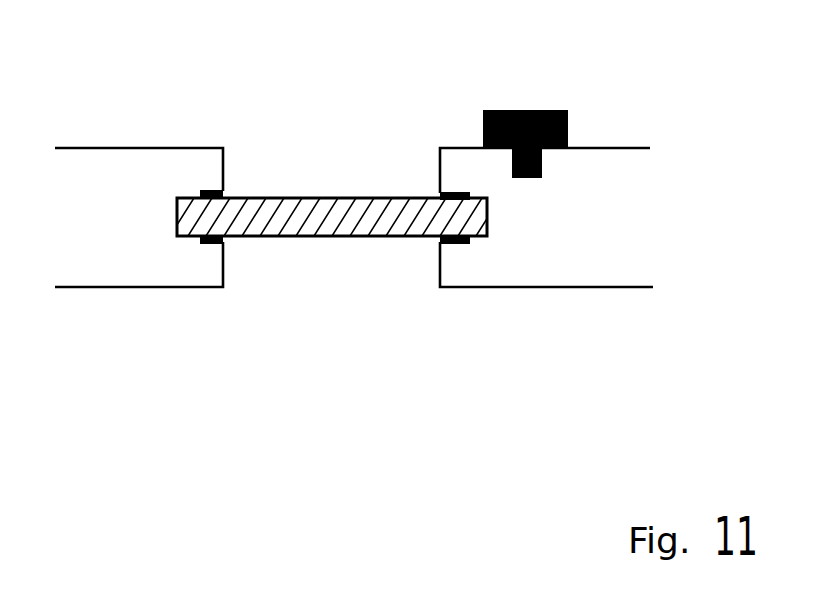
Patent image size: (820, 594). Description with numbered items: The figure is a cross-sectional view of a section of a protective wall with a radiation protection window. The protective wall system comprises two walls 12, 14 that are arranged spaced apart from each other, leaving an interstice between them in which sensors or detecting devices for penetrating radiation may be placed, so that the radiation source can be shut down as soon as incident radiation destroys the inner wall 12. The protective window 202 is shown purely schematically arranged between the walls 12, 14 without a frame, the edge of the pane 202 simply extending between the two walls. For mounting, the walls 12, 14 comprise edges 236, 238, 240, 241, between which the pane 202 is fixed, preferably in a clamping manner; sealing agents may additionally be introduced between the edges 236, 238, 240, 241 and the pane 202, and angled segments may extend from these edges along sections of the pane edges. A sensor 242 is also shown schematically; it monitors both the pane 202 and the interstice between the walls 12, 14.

The inner wall 12 is at (134, 148).
The wall 14 is at (138, 290).
The protective window 202 is at (340, 221).
The edge 236 is at (208, 242).
The edge 238 is at (212, 190).
The edge 240 is at (460, 244).
The edge 241 is at (453, 191).
The sensor 242 is at (533, 110).